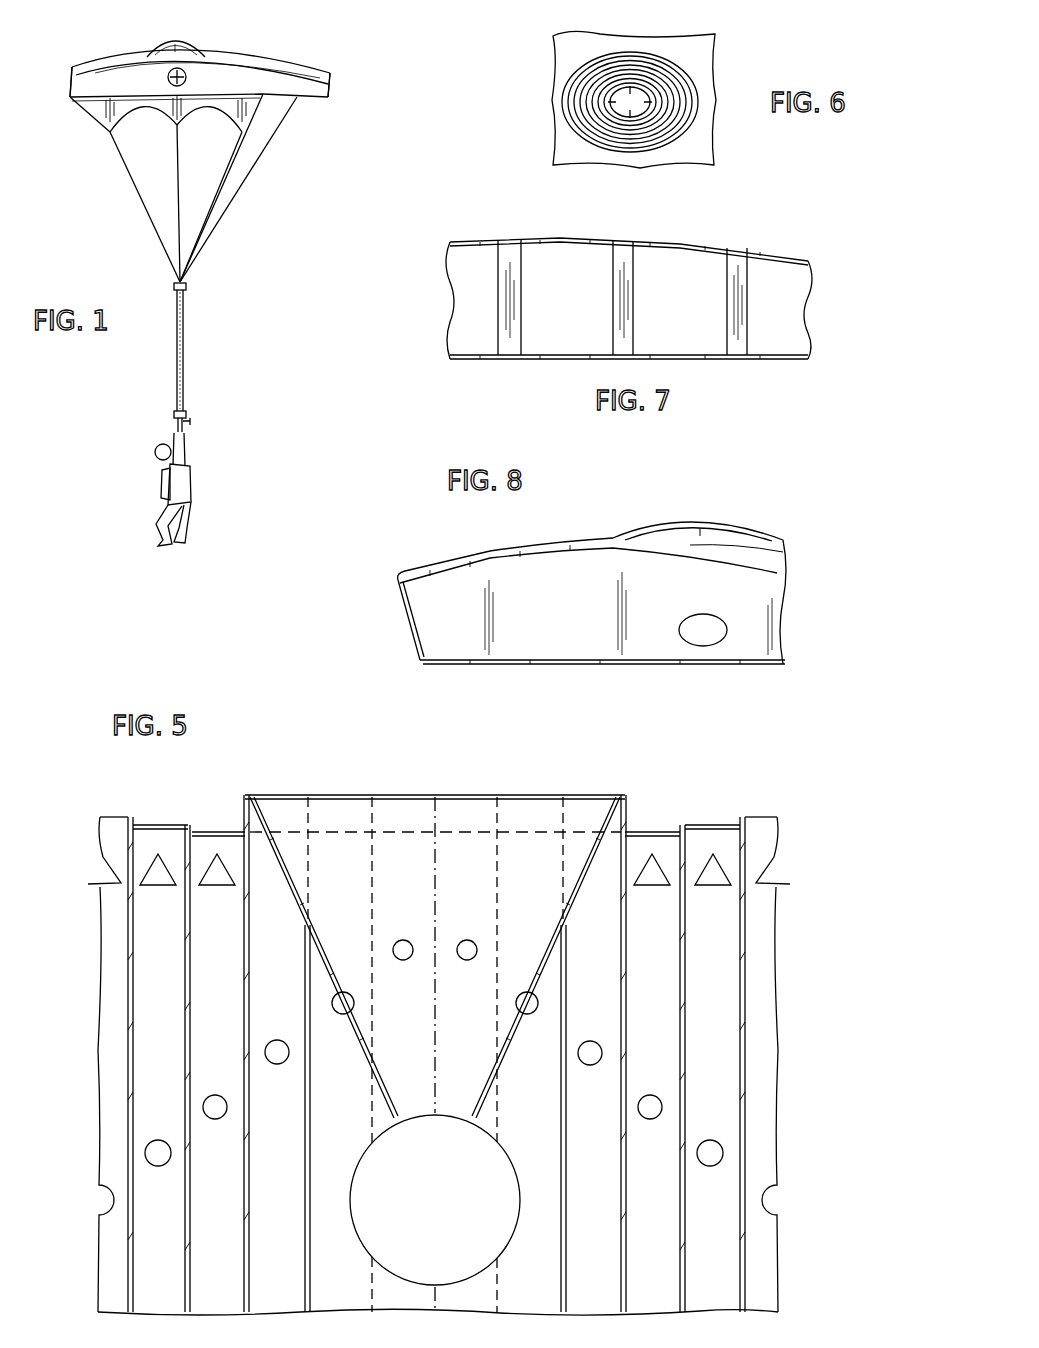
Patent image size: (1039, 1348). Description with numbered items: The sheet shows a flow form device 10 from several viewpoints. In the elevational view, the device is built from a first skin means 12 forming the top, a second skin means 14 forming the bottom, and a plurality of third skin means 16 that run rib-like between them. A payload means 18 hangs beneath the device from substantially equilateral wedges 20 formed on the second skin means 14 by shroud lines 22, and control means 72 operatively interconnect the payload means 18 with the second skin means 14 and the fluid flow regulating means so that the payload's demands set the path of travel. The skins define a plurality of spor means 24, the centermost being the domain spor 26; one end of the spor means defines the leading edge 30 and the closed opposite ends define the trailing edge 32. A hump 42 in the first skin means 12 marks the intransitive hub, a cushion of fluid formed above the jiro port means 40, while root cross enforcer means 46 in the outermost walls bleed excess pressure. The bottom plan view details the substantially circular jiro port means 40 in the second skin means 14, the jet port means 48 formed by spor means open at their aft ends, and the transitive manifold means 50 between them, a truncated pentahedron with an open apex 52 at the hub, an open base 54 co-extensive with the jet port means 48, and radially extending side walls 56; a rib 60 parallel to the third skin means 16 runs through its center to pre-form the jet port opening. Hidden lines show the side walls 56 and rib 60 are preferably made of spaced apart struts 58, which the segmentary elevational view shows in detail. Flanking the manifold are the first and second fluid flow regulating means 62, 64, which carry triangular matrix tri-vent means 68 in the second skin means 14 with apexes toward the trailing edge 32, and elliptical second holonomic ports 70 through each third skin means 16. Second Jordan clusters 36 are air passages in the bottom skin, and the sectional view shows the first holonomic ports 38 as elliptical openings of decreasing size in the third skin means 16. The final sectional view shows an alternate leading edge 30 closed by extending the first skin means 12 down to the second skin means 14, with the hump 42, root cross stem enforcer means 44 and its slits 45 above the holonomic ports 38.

In FIG. 1, the flow form device 10 is at (247, 36).
In FIG. 8, the flow form device 10 is at (604, 523).
In FIG. 5, the flow form device 10 is at (368, 786).
In FIG. 1, the first skin means 12 is at (108, 60).
In FIG. 7, the first skin means 12 is at (582, 240).
In FIG. 8, the first skin means 12 is at (485, 552).
In FIG. 1, the second skin means 14 is at (92, 100).
In FIG. 7, the second skin means 14 is at (523, 362).
In FIG. 8, the second skin means 14 is at (580, 665).
In FIG. 5, the second skin means 14 is at (168, 1060).
In FIG. 6, the third skin means 16 is at (556, 56).
In FIG. 8, the third skin means 16 is at (762, 603).
In FIG. 5, the third skin means 16 is at (244, 996).
In FIG. 1, the payload means 18 is at (187, 384).
In FIG. 1, the equilateral wedges 20 is at (165, 114).
In FIG. 1, the shroud lines 22 is at (215, 188).
In FIG. 5, the spor means 24 is at (166, 975).
In FIG. 7, the domain spor 26 is at (470, 278).
In FIG. 5, the domain spor 26 is at (536, 1284).
In FIG. 1, the leading edge 30 is at (68, 80).
In FIG. 8, the leading edge 30 is at (402, 603).
In FIG. 1, the trailing edge 32 is at (333, 97).
In FIG. 5, the trailing edge 32 is at (157, 825).
In FIG. 5, the second Jordan clusters 36 is at (203, 1108).
In FIG. 6, the first holonomic ports 38 is at (563, 110).
In FIG. 8, the first holonomic ports 38 is at (698, 617).
In FIG. 5, the first holonomic ports 38 is at (185, 1197).
In FIG. 5, the jiro port means 40 is at (361, 1158).
In FIG. 1, the hump 42 is at (195, 47).
In FIG. 8, the hump 42 is at (650, 531).
In FIG. 8, the root cross stem enforcer means 44 is at (688, 530).
In FIG. 8, the slits 45 is at (760, 540).
In FIG. 1, the root cross enforcer means 46 is at (167, 78).
In FIG. 1, the jet port means 48 is at (334, 78).
In FIG. 5, the jet port means 48 is at (409, 814).
In FIG. 5, the transitive manifold means 50 is at (402, 1066).
In FIG. 5, the open apex 52 is at (450, 1113).
In FIG. 5, the open base 54 is at (347, 837).
In FIG. 5, the side walls 56 is at (352, 992).
In FIG. 7, the spaced apart struts 58 is at (617, 298).
In FIG. 5, the rib 60 is at (437, 880).
In FIG. 1, the first fluid flow regulating means 62 is at (302, 108).
In FIG. 5, the first fluid flow regulating means 62 is at (668, 816).
In FIG. 5, the second fluid flow regulating means 64 is at (118, 816).
In FIG. 5, the matrix tri-vent means 68 is at (158, 886).
In FIG. 5, the second holonomic ports 70 is at (190, 873).
In FIG. 1, the control means 72 is at (265, 156).